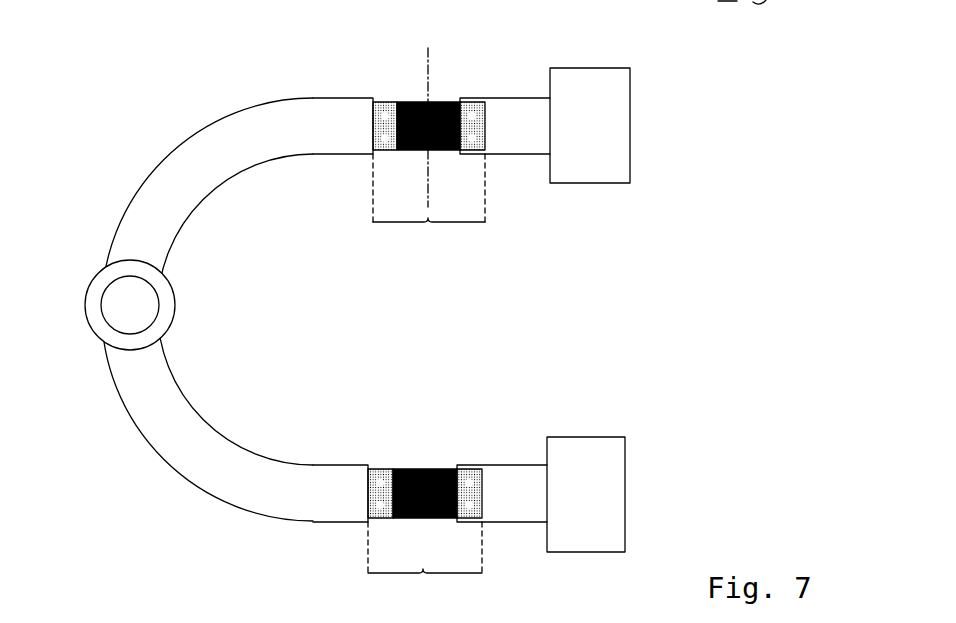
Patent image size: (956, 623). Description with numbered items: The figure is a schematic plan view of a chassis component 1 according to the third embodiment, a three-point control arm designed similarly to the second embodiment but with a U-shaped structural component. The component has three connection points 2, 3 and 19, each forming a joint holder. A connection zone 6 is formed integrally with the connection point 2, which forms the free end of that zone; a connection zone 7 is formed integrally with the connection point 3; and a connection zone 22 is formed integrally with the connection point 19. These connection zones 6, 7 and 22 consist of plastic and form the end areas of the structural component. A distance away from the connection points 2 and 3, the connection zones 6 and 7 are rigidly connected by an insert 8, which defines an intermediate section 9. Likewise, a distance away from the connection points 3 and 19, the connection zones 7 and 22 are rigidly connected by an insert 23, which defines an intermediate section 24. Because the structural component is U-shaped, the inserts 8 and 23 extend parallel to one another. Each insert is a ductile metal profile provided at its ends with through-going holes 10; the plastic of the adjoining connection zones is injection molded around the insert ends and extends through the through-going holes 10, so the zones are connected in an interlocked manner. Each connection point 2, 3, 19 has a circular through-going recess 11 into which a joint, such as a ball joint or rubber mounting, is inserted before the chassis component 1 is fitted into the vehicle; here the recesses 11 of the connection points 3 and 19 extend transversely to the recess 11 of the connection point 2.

The chassis component 1 is at (104, 44).
The connection point 2 is at (93, 289).
The connection point 3 is at (604, 178).
The connection zone 6 is at (183, 155).
The connection zone 7 is at (521, 106).
The insert 8 is at (413, 105).
The intermediate section 9 is at (428, 222).
The through-going holes 10 is at (384, 112).
The recess 11 is at (148, 307).
The connection point 19 is at (618, 523).
The connection zone 22 is at (512, 476).
The insert 23 is at (433, 470).
The intermediate section 24 is at (423, 573).